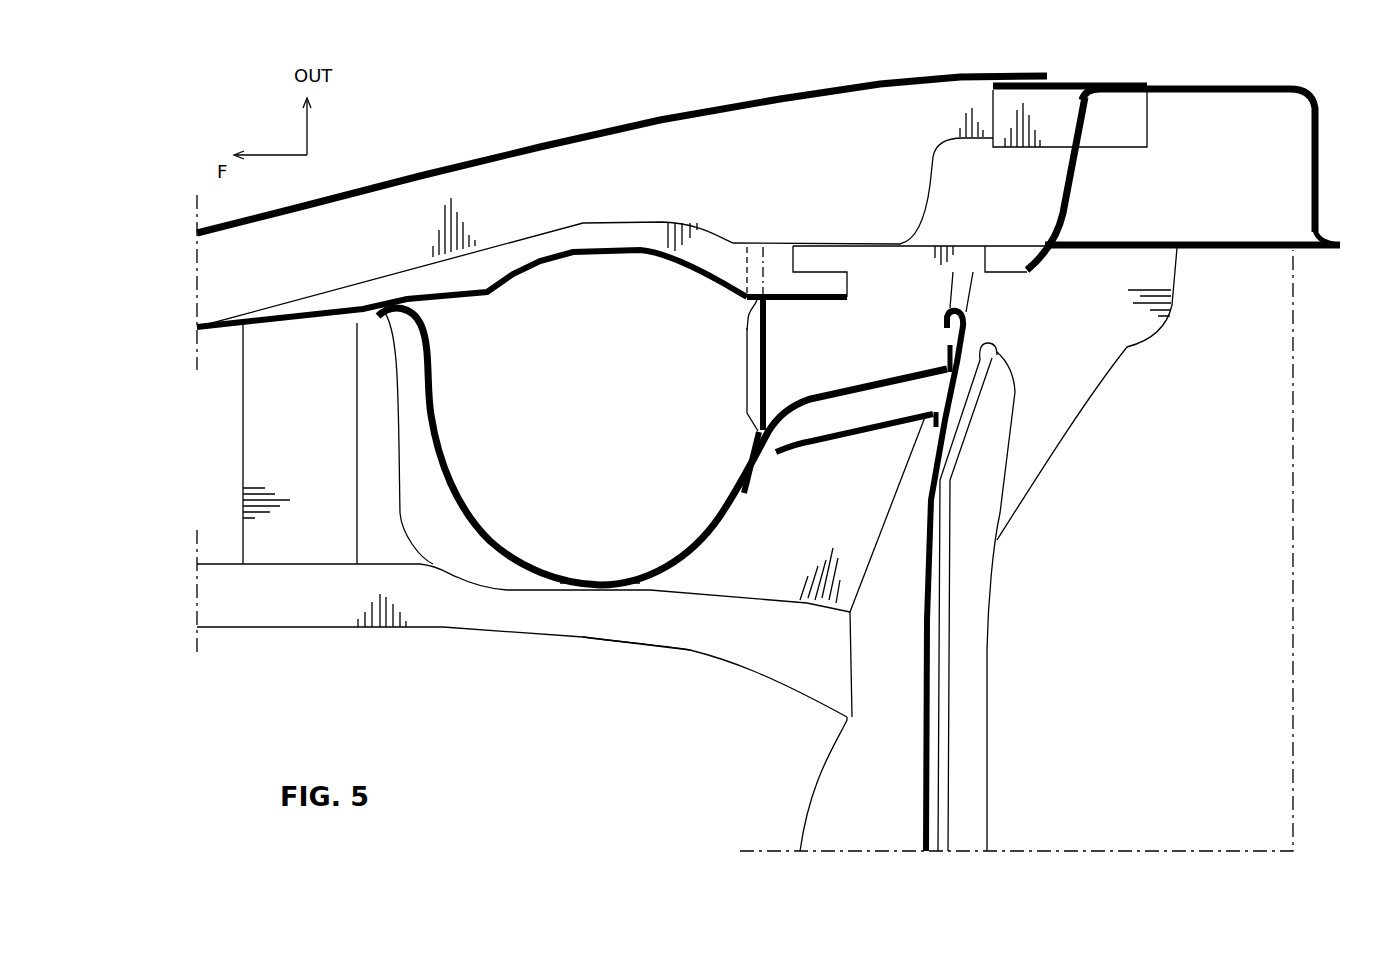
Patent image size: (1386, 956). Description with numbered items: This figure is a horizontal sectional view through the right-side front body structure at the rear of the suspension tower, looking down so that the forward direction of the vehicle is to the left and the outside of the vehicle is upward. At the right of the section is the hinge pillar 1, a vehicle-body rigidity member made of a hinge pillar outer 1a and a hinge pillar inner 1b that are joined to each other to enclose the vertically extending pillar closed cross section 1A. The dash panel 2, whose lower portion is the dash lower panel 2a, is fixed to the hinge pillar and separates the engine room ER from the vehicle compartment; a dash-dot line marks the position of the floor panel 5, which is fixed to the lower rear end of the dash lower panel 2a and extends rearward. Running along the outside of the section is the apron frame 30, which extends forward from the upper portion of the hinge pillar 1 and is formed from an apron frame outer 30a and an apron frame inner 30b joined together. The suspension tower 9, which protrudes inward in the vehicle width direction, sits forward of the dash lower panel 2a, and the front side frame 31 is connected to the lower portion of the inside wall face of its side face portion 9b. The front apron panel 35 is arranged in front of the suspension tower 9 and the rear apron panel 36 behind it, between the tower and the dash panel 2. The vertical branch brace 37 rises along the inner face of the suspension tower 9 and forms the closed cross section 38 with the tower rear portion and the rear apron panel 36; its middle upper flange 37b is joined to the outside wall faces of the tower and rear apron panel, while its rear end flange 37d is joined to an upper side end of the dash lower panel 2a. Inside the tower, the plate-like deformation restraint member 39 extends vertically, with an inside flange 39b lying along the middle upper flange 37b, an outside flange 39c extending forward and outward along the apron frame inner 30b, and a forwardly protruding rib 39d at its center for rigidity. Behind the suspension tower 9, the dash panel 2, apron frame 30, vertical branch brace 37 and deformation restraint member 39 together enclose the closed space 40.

The hinge pillar 1 is at (1190, 262).
The hinge pillar outer 1a is at (1225, 88).
The hinge pillar inner 1b is at (1228, 252).
The pillar closed cross section 1A is at (1203, 181).
The dash panel 2 is at (1045, 500).
The dash lower panel 2a is at (1075, 385).
The floor panel 5 is at (1265, 598).
The suspension tower 9 is at (495, 567).
The side face portion 9b is at (592, 597).
The apron frame 30 is at (510, 125).
The apron frame outer 30a is at (432, 185).
The apron frame inner 30b is at (410, 280).
The front side frame 31 is at (673, 628).
The front apron panel 35 is at (265, 441).
The rear apron panel 36 is at (767, 572).
The vertical branch brace 37 is at (705, 483).
The middle upper flange 37b is at (693, 545).
The rear end flange 37d is at (950, 358).
The closed cross section 38 is at (845, 412).
The deformation restraint member 39 is at (740, 368).
The inside flange 39b is at (748, 470).
The outside flange 39c is at (748, 312).
The rib 39d is at (750, 390).
The closed space 40 is at (849, 355).
The engine room ER is at (506, 744).